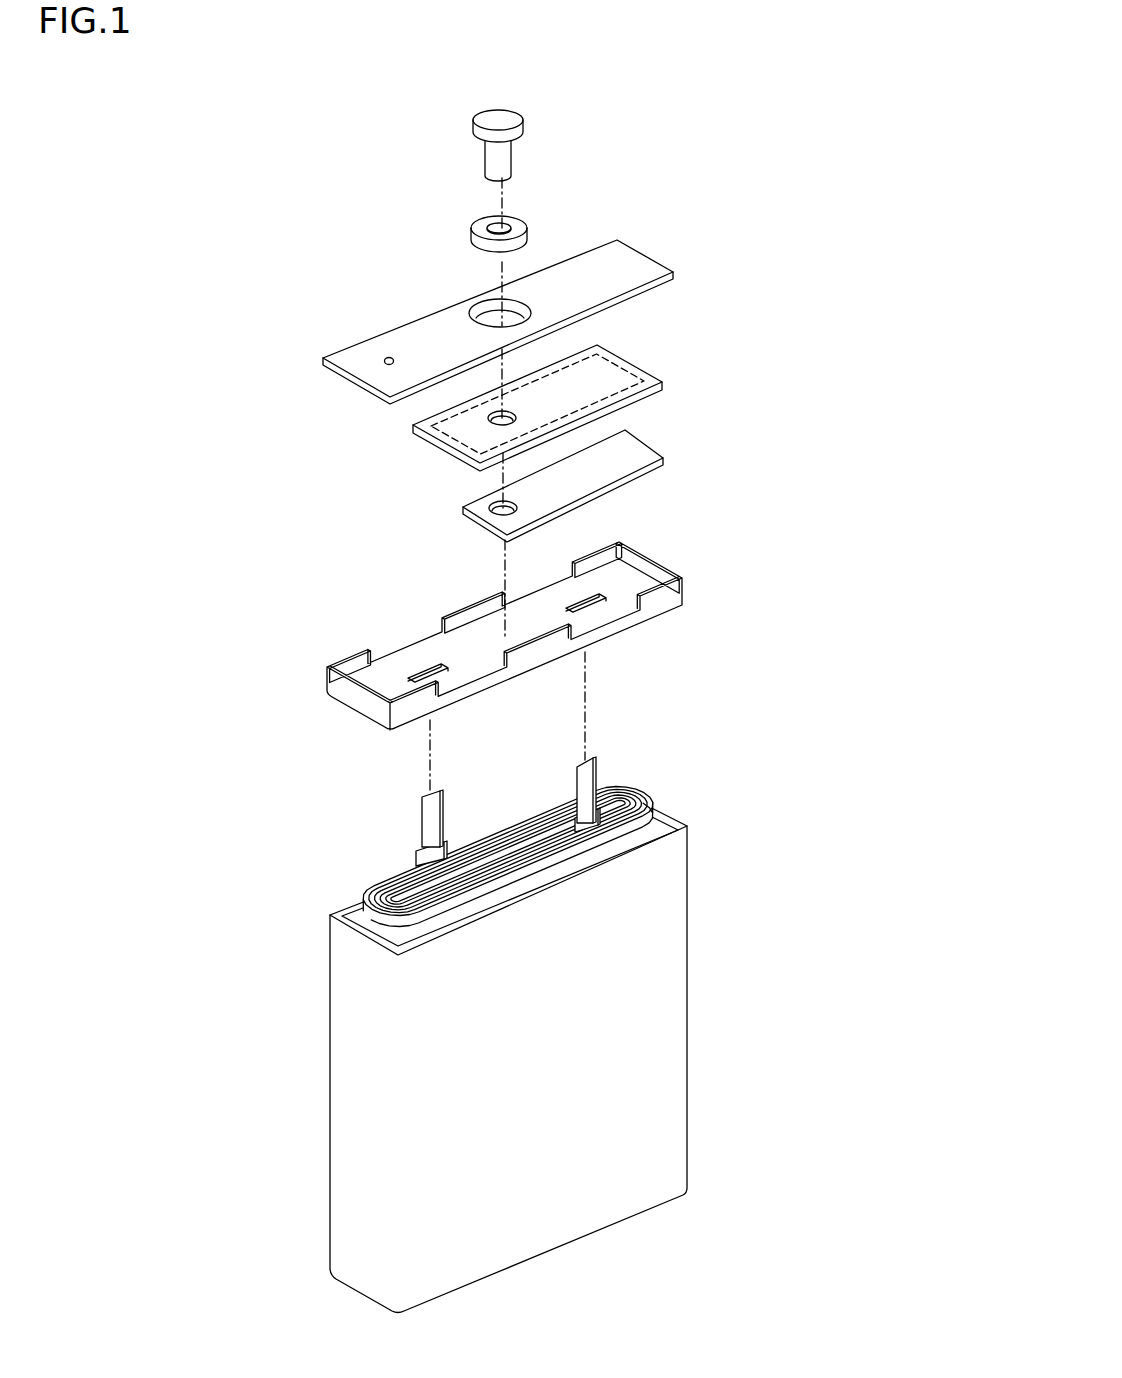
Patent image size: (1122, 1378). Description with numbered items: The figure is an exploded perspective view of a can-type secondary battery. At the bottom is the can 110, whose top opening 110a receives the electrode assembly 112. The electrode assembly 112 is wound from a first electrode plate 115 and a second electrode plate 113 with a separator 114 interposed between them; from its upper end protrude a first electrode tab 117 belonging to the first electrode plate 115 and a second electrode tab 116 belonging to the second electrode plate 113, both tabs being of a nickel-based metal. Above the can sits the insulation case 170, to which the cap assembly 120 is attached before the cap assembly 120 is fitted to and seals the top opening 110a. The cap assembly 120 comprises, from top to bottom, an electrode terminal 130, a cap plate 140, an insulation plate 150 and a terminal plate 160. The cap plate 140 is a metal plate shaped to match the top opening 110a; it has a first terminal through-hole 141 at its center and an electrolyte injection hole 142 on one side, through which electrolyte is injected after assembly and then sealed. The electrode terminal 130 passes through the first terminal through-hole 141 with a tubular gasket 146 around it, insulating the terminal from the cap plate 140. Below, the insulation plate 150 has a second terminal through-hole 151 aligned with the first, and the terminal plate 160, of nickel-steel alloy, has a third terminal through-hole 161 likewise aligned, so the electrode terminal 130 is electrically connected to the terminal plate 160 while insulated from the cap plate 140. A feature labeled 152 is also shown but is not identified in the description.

The can 110 is at (565, 1053).
The top opening 110a is at (666, 820).
The electrode assembly 112 is at (550, 818).
The second electrode plate 113 is at (641, 801).
The separator 114 is at (636, 800).
The first electrode plate 115 is at (515, 816).
The second electrode tab 116 is at (431, 817).
The first electrode tab 117 is at (587, 785).
The cap assembly 120 is at (793, 97).
The electrode terminal 130 is at (507, 120).
The cap plate 140 is at (543, 311).
The first terminal through-hole 141 is at (487, 310).
The electrolyte injection hole 142 is at (388, 360).
The tubular gasket 146 is at (482, 227).
The insulation plate 150 is at (552, 403).
The second terminal through-hole 151 is at (448, 443).
The terminal hole of insulating plate 152 is at (487, 420).
The terminal plate 160 is at (584, 485).
The third terminal through-hole 161 is at (480, 517).
The insulation case 170 is at (418, 650).